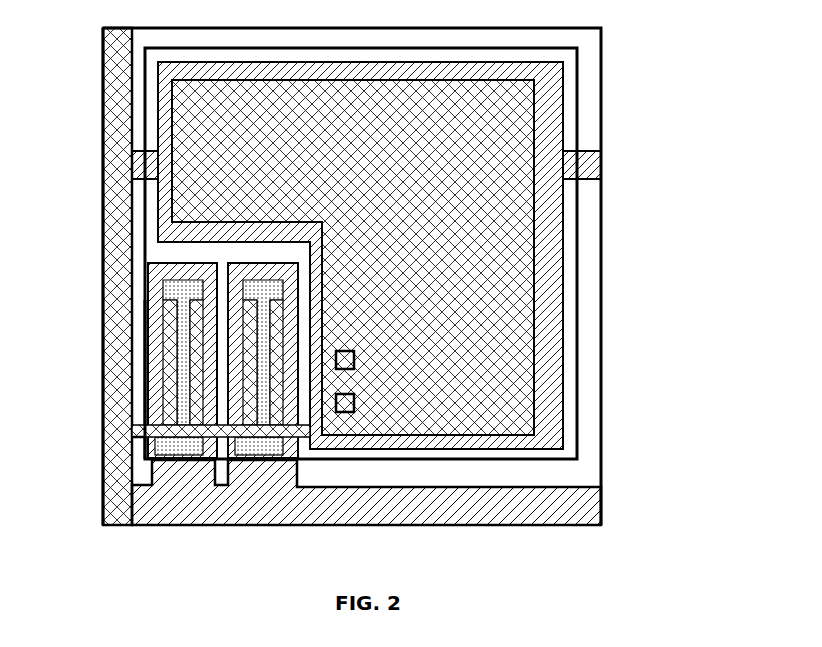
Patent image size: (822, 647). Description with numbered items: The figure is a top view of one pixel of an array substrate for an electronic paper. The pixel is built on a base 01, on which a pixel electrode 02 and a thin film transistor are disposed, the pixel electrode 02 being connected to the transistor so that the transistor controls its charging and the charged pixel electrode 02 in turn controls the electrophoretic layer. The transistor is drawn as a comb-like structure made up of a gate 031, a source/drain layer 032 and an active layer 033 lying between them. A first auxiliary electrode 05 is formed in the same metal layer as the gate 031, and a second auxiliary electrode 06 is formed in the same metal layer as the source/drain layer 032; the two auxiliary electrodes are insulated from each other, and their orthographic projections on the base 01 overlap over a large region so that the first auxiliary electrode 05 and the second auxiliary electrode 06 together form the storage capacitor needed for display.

The base 01 is at (588, 38).
The pixel electrode 02 is at (578, 307).
The first auxiliary electrode 05 is at (163, 67).
The second auxiliary electrode 06 is at (177, 198).
The gate 031 is at (157, 272).
The source/drain layer 032 is at (155, 356).
The active layer 033 is at (163, 286).